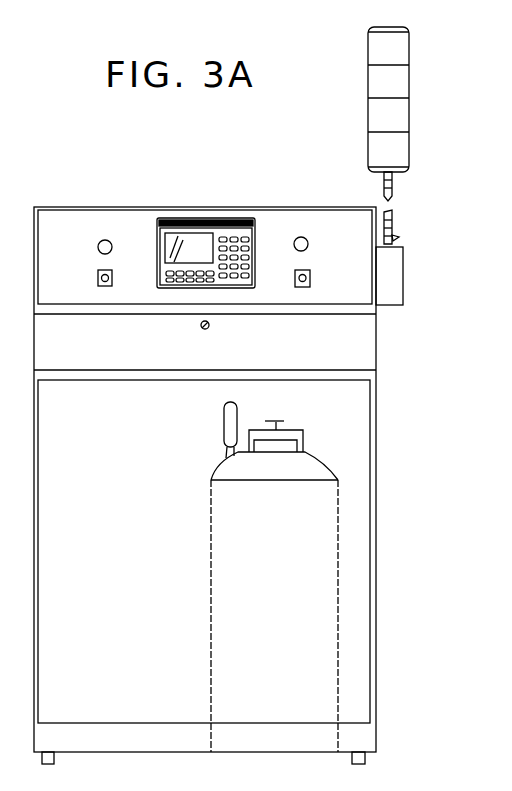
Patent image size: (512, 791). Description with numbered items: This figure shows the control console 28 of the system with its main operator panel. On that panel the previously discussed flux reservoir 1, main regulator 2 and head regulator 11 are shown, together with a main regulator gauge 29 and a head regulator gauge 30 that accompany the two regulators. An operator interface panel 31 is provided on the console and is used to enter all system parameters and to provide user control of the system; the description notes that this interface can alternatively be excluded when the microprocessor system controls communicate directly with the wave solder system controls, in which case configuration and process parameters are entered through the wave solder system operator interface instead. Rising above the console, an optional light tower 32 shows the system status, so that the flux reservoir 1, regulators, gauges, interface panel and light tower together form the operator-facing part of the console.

The flux reservoir 1 is at (211, 480).
The main regulator 2 is at (310, 270).
The head regulator 11 is at (98, 273).
The control console 28 is at (372, 380).
The main regulator gauge 29 is at (310, 212).
The head regulator gauge 30 is at (115, 214).
The operator interface panel 31 is at (206, 225).
The light tower 32 is at (410, 132).